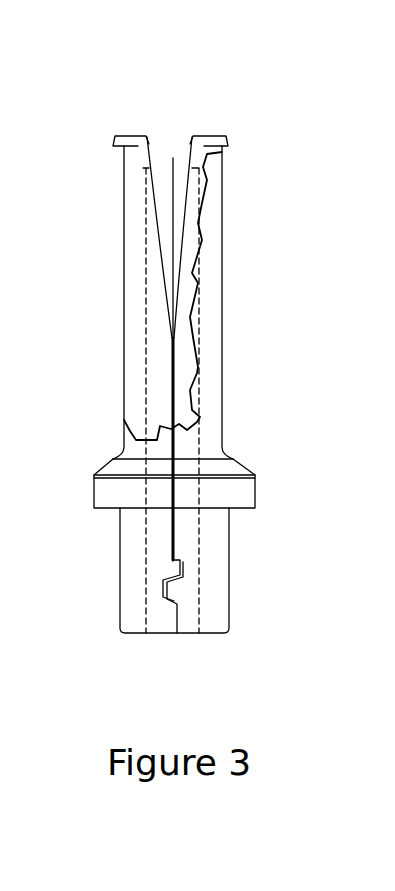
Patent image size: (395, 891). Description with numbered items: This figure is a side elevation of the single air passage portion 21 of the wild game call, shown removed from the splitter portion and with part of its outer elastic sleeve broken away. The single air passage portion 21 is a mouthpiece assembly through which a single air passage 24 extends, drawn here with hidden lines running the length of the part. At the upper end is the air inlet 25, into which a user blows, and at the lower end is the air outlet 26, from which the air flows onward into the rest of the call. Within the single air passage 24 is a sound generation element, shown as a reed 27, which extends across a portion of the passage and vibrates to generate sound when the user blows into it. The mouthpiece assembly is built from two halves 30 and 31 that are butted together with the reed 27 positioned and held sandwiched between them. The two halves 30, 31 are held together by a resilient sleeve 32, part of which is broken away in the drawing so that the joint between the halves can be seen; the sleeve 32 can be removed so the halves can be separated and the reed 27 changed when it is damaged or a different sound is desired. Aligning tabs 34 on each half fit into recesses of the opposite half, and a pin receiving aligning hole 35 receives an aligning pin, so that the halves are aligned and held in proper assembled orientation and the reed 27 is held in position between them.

The single air passage portion 21 is at (90, 292).
The single air passage 24 is at (163, 190).
The air inlet 25 is at (152, 90).
The air outlet 26 is at (187, 617).
The reed 27 is at (176, 160).
The first half 30 is at (133, 308).
The second half 31 is at (190, 282).
The resilient sleeve 32 is at (215, 432).
The aligning tabs 34 is at (163, 580).
The pin receiving aligning hole 35 is at (168, 603).